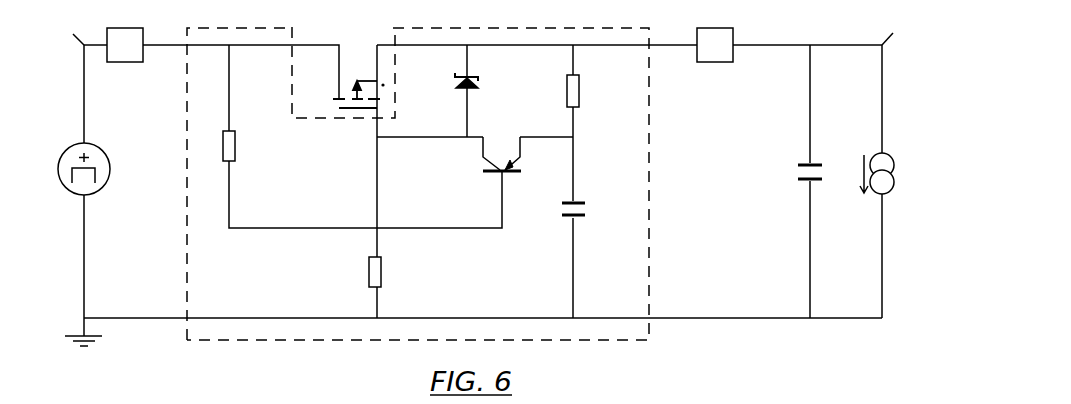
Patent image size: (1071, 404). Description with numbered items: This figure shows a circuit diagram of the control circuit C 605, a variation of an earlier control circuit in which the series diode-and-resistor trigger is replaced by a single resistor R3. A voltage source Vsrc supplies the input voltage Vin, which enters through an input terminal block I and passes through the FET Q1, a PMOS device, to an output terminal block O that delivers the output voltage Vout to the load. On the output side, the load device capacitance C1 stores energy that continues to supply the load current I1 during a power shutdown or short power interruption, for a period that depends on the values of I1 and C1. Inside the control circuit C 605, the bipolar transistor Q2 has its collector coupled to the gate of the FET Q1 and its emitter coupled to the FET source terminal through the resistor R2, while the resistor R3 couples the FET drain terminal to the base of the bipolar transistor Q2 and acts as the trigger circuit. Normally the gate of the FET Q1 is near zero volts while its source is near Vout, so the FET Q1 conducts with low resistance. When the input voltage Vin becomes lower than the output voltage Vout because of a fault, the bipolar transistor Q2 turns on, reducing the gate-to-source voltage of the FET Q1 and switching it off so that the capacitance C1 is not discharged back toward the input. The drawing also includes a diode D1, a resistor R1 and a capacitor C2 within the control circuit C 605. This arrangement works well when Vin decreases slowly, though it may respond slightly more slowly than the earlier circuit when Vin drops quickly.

The control circuit C 605 is at (298, 297).
The input voltage Vin is at (57, 29).
The output voltage Vout is at (916, 30).
The input voltage source Vsrc is at (84, 169).
The input terminal block I is at (125, 53).
The output terminal block O is at (715, 45).
The FET Q1 is at (343, 72).
The bipolar transistor Q2 is at (483, 162).
The zener diode D1 is at (485, 81).
The resistor R1 is at (392, 266).
The resistor R2 is at (592, 86).
The resistor R3 is at (247, 144).
The load device capacitance C1 is at (792, 173).
The capacitor C2 is at (591, 208).
The load current I1 is at (889, 166).